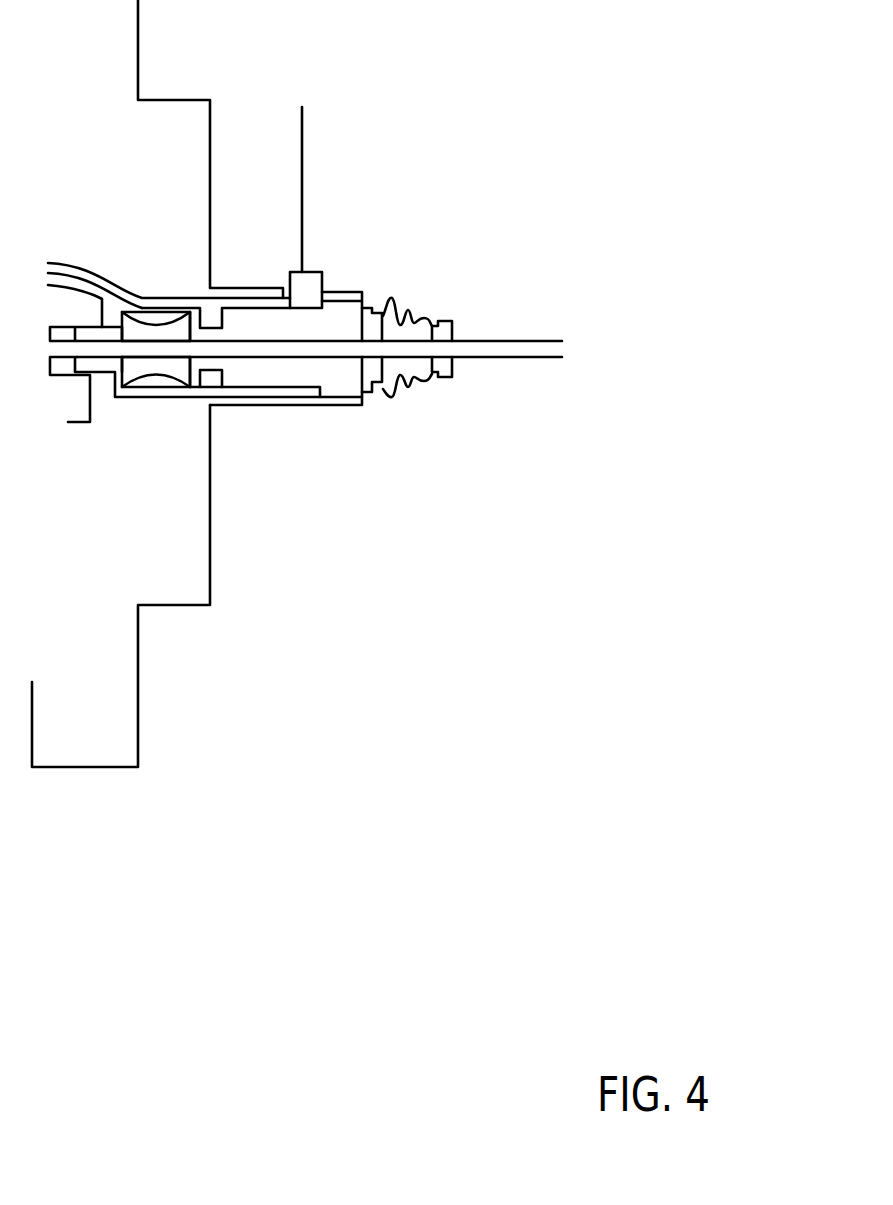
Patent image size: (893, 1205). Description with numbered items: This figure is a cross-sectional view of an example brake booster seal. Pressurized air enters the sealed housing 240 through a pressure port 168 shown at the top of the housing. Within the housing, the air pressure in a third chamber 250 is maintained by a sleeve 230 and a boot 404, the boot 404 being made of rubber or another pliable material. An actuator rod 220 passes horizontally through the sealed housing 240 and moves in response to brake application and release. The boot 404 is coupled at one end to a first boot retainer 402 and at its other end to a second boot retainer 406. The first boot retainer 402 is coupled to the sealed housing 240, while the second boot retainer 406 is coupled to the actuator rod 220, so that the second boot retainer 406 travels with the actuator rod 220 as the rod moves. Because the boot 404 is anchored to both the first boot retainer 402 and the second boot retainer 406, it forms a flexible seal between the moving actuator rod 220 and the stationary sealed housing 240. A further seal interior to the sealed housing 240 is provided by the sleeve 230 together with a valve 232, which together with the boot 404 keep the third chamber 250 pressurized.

The pressure port 168 is at (320, 270).
The actuator rod 220 is at (512, 340).
The sleeve 230 is at (320, 387).
The valve 232 is at (163, 375).
The sealed housing 240 is at (210, 557).
The third chamber 250 is at (303, 337).
The first boot retainer 402 is at (372, 308).
The boot 404 is at (408, 310).
The second boot retainer 406 is at (452, 362).